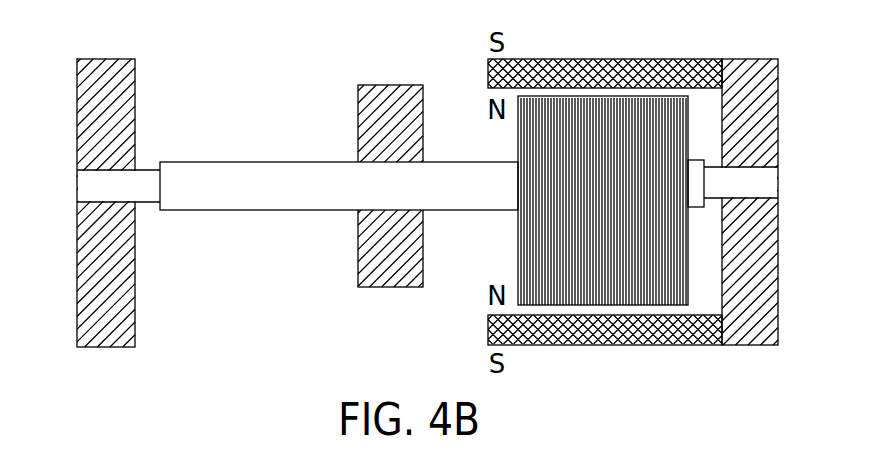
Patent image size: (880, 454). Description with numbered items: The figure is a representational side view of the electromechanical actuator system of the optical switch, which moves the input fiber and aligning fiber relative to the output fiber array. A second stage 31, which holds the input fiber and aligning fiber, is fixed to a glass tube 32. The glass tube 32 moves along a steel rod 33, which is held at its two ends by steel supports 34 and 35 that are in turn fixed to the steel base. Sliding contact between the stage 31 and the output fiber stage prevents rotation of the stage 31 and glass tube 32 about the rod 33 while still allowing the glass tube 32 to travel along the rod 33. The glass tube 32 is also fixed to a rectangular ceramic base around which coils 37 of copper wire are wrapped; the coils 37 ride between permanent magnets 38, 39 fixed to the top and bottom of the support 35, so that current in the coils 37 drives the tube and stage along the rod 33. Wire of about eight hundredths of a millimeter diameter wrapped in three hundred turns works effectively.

The second stage 31 is at (392, 103).
The glass tube 32 is at (190, 199).
The steel rod 33 is at (768, 183).
The steel support 34 is at (93, 145).
The steel support 35 is at (781, 95).
The coils 37 is at (532, 235).
The permanent magnet 38 is at (604, 63).
The permanent magnet 39 is at (610, 327).